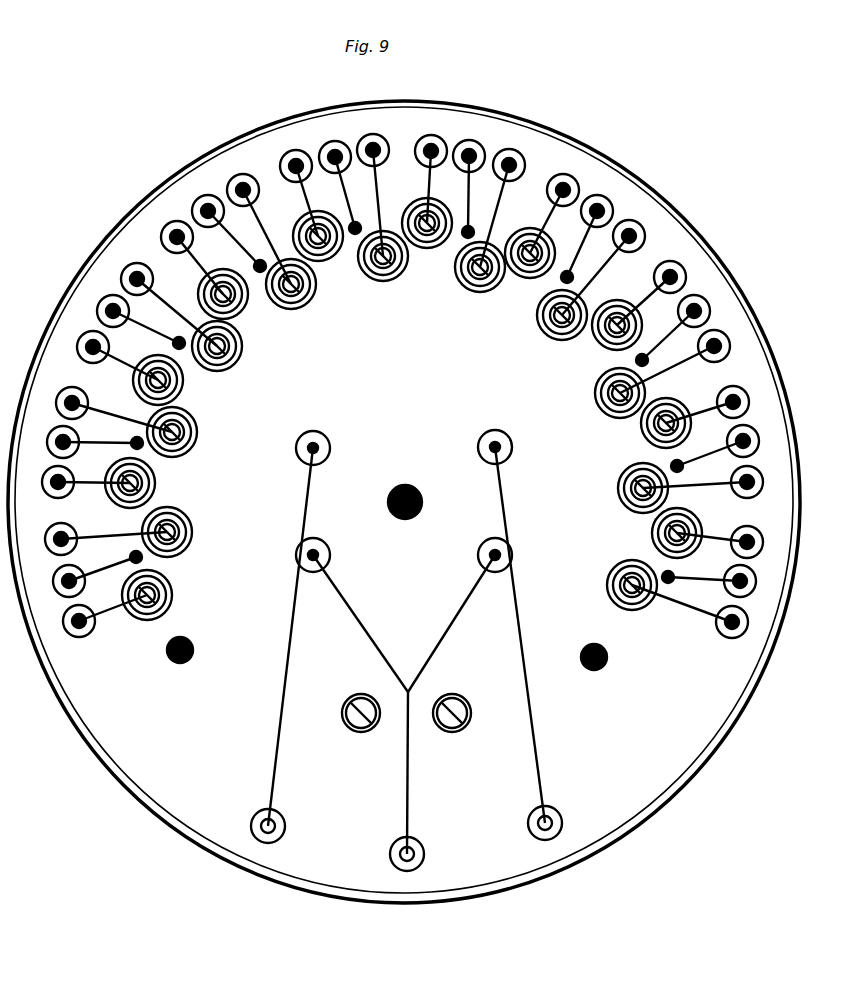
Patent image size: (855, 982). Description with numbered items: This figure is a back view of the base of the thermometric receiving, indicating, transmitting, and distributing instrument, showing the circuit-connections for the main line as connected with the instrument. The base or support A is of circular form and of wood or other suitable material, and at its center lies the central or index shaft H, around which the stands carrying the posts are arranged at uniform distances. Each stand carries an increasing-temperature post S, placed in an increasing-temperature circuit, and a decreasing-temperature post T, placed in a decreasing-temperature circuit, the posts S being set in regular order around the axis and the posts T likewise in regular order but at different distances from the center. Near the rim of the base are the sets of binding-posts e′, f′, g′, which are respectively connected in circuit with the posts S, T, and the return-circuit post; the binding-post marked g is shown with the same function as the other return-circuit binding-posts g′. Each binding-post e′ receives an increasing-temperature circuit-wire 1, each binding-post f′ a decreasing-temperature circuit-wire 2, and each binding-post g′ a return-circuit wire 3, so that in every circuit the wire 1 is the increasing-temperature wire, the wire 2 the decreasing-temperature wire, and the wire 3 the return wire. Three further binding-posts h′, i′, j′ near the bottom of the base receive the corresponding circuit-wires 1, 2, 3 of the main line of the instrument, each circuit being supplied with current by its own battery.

The base or support A is at (404, 502).
The central or index shaft H is at (411, 500).
The increasing-temperature post S is at (407, 416).
The decreasing-temperature post T is at (409, 428).
The binding-post e′ is at (409, 377).
The binding-post f′ is at (409, 334).
The binding-post g′ is at (414, 358).
The contact terminal g is at (58, 442).
The increasing-temperature circuit-wire 1 is at (402, 487).
The decreasing-temperature circuit-wire 2 is at (404, 488).
The return-circuit wire 3 is at (403, 505).
The binding-post for main line i′ is at (272, 821).
The binding-post for main line h′ is at (554, 818).
The binding-post for main line j′ is at (409, 847).